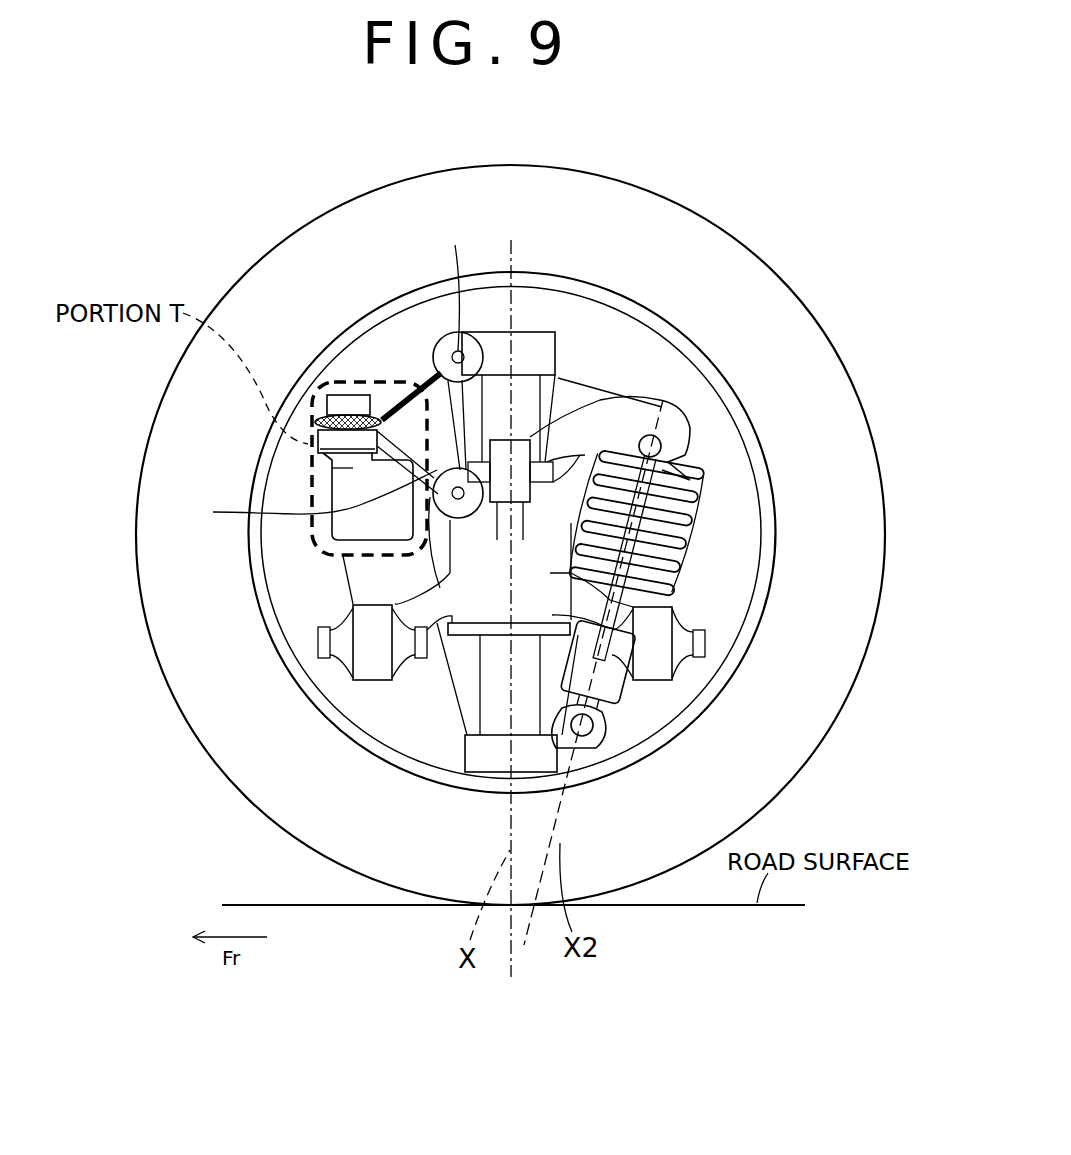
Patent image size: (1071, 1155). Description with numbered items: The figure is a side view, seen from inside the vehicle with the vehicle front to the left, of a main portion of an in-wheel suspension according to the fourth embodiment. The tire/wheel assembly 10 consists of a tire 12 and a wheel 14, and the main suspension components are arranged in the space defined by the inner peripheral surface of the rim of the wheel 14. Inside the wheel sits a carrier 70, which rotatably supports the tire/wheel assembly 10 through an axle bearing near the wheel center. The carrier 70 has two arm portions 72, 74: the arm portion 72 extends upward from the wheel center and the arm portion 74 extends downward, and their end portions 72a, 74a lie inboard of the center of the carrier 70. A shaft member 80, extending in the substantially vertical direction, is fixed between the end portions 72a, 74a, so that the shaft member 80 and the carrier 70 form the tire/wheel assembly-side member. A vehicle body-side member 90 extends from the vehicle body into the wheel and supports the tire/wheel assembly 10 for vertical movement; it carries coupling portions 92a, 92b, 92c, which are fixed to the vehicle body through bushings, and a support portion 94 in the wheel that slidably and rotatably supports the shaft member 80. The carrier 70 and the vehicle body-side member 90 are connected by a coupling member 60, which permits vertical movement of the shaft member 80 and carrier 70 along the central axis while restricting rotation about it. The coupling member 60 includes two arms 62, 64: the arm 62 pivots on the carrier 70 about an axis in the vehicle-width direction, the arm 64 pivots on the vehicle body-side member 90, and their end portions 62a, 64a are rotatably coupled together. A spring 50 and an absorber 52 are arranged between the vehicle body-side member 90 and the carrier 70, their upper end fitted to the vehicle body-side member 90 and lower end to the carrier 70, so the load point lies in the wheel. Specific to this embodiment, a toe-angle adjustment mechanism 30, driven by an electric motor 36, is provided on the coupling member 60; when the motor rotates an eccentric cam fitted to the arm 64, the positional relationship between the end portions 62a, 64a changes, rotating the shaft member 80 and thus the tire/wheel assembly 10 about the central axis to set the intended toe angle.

The tire/wheel assembly 10 is at (723, 230).
The tire 12 is at (777, 323).
The wheel 14 is at (618, 296).
The toe-angle adjustment mechanism 30 is at (317, 443).
The electric motor 36 is at (342, 523).
The spring 50 is at (680, 493).
The absorber 52 is at (607, 683).
The coupling member 60 is at (397, 370).
The arm 62 is at (420, 373).
The end portion 62a is at (350, 403).
The arm 64 is at (466, 516).
The end portion 64a is at (330, 443).
The carrier 70 is at (444, 667).
The arm portion 72 is at (545, 411).
The end portion 72a is at (533, 345).
The arm portion 74 is at (463, 688).
The end portion 74a is at (477, 760).
The shaft member 80 is at (485, 695).
The vehicle body-side member 90 is at (462, 623).
The coupling portion 92a is at (657, 625).
The coupling portion 92b is at (610, 407).
The coupling portion 92c is at (367, 623).
The support portion 94 is at (550, 555).